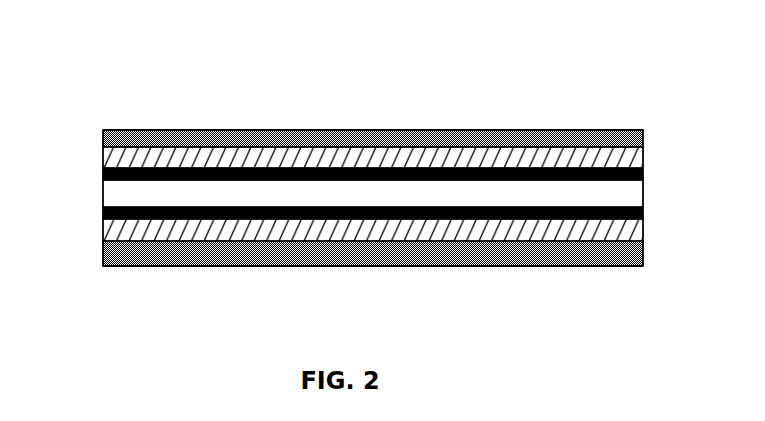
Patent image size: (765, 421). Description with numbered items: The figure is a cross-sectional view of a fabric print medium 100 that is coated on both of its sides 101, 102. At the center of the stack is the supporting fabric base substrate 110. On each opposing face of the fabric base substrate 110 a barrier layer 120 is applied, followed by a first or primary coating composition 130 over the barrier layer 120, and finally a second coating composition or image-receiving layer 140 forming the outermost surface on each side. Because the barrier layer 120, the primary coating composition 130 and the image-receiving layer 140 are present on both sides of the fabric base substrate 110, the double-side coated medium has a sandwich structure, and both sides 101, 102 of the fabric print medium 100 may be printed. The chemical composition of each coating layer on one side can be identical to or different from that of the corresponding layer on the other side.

The fabric print medium 100 is at (488, 96).
The first side 101 is at (210, 95).
The second side 102 is at (192, 351).
The fabric base substrate 110 is at (643, 196).
The barrier layer 120 is at (643, 177).
The primary coating composition 130 is at (103, 163).
The image-receiving layer 140 is at (643, 139).